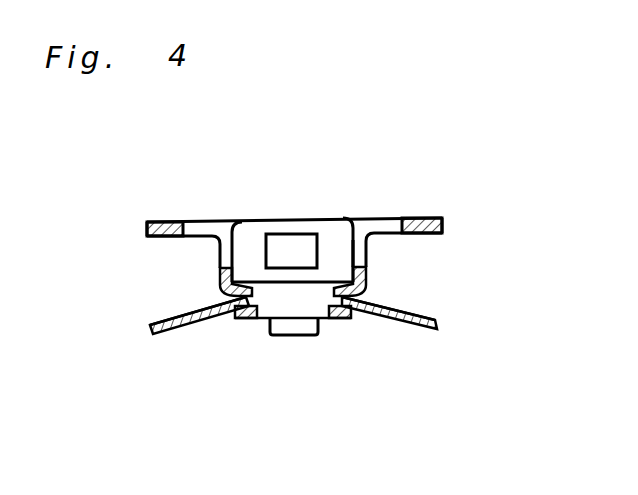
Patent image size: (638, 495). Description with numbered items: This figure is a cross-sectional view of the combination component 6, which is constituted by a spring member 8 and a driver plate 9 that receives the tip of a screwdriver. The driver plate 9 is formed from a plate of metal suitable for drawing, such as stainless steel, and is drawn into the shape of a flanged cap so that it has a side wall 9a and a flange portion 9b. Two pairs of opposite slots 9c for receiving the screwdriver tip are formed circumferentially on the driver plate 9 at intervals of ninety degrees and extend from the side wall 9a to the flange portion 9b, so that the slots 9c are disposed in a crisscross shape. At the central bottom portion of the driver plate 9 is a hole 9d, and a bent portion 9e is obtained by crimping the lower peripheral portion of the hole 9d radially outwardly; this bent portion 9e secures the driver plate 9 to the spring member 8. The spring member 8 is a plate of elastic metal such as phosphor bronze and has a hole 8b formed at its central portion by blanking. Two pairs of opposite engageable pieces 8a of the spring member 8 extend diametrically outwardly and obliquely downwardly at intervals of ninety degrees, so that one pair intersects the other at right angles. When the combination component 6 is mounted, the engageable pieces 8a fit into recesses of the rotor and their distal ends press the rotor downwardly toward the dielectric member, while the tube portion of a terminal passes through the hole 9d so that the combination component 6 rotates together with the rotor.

The combination component 6 is at (140, 354).
The spring member 8 is at (370, 300).
The engageable pieces 8a is at (197, 322).
The hole 8b is at (256, 298).
The driver plate 9 is at (367, 281).
The side wall 9a is at (351, 246).
The flange portion 9b is at (443, 217).
The slots 9c is at (204, 216).
The hole 9d is at (290, 292).
The bent portion 9e is at (342, 312).